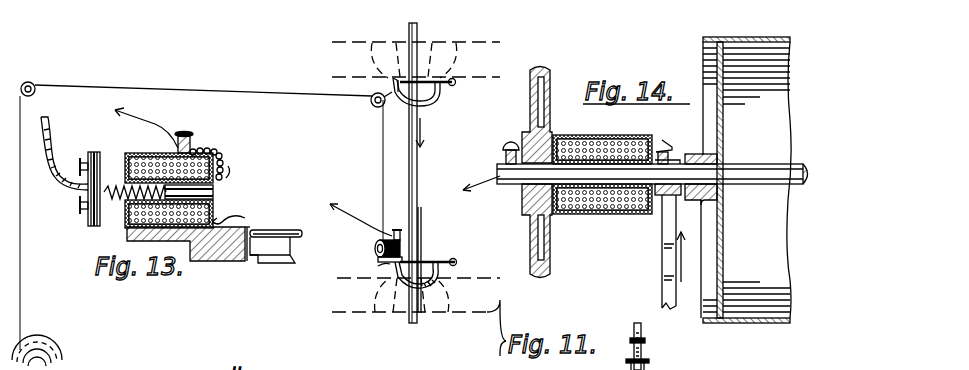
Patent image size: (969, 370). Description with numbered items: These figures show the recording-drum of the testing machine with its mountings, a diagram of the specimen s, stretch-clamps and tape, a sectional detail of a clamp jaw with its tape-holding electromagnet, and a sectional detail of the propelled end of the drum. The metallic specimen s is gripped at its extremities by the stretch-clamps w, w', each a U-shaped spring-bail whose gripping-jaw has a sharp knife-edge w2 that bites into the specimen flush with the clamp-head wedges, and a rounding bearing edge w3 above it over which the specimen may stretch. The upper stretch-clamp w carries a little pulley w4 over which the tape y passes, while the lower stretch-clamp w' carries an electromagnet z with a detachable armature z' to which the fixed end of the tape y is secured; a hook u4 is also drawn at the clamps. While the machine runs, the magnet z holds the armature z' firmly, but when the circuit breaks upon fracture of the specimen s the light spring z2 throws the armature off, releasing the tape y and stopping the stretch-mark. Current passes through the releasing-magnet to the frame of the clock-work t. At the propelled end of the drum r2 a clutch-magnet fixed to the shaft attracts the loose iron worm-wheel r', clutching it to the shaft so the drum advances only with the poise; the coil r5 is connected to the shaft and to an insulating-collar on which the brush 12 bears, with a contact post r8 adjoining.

In FIG. 13, the tape y is at (190, 224).
In FIG. 13, the detachable armature z' is at (93, 178).
In FIG. 13, the electromagnet z is at (180, 168).
In FIG. 11, the electromagnet z is at (381, 230).
In FIG. 13, the light spring z2 is at (158, 185).
In FIG. 13, the clock-work t is at (229, 174).
In FIG. 13, the stretch-clamp w is at (186, 256).
In FIG. 11, the stretch-clamp w is at (420, 262).
In FIG. 13, the knife-edge w2 is at (272, 256).
In FIG. 13, the rounding bearing edge w3 is at (278, 231).
In FIG. 11, the pulley w4 is at (369, 107).
In FIG. 11, the stretch-clamp w' is at (425, 97).
In FIG. 11, the hook u4 is at (387, 177).
In FIG. 11, the specimen s is at (416, 173).
In FIG. 14, the worm-wheel r' is at (527, 186).
In FIG. 14, the coil r5 is at (602, 186).
In FIG. 14, the contact post r8 is at (666, 150).
In FIG. 14, the drum r2 is at (652, 180).
In FIG. 14, the brush 12 is at (662, 281).